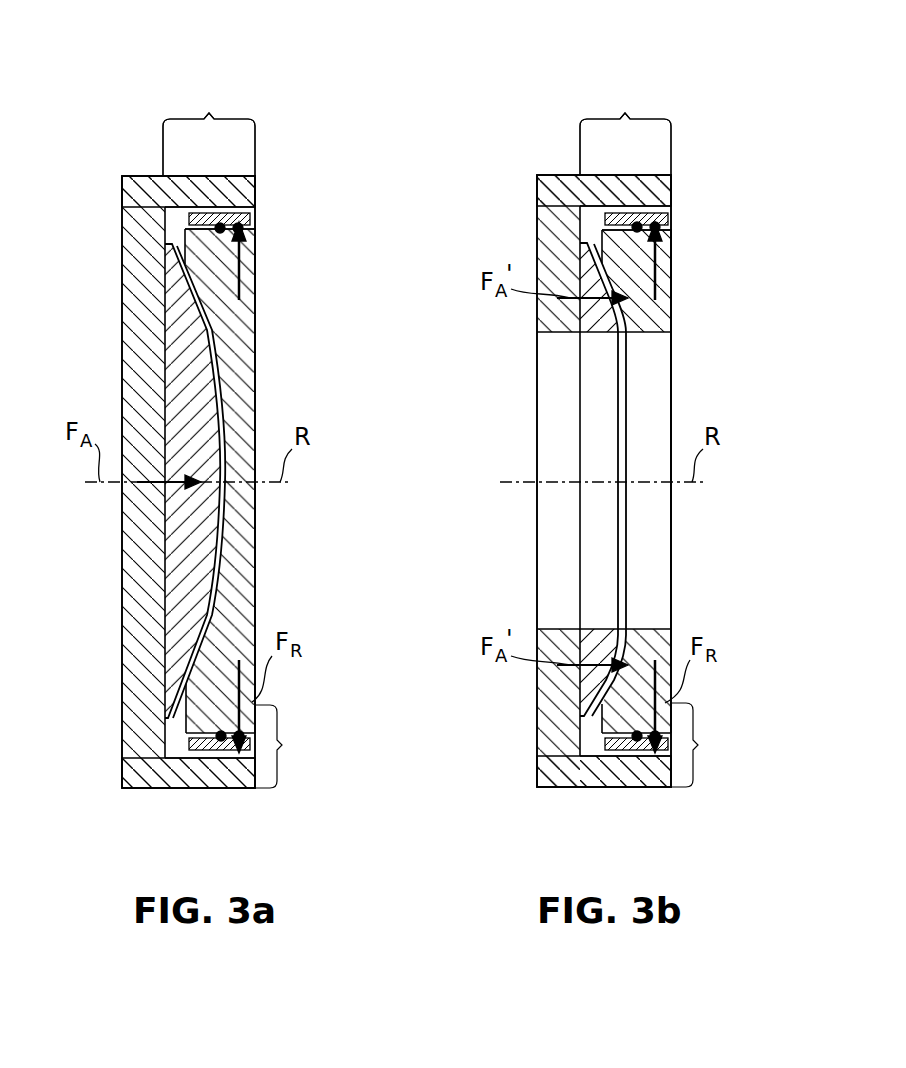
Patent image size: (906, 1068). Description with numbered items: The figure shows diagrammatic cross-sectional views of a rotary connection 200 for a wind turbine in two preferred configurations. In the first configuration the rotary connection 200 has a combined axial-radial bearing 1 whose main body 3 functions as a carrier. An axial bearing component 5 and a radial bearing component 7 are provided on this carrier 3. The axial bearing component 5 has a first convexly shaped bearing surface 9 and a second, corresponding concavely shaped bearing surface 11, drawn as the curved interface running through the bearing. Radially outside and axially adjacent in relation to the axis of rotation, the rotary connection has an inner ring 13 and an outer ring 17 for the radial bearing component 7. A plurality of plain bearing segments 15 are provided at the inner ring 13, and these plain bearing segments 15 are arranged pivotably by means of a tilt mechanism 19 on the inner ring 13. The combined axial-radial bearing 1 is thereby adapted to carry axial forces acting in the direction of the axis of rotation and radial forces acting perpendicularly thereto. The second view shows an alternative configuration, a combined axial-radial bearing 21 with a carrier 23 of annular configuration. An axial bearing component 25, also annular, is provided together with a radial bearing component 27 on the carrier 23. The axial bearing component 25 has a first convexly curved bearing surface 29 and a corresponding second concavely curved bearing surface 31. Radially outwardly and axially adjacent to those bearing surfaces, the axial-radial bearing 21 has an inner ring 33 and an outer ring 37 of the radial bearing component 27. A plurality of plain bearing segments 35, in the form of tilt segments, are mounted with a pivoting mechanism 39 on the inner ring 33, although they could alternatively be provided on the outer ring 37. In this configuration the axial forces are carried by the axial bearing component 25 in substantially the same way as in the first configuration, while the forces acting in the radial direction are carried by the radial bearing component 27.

In FIG. 3a, the combined axial-radial bearing 1 is at (110, 175).
In FIG. 3a, the main body 3 is at (142, 687).
In FIG. 3a, the axial bearing component 5 is at (209, 132).
In FIG. 3a, the radial bearing component 7 is at (277, 746).
In FIG. 3a, the first convexly shaped bearing surface 9 is at (180, 357).
In FIG. 3a, the second concavely shaped bearing surface 11 is at (232, 397).
In FIG. 3a, the inner ring 13 is at (247, 248).
In FIG. 3a, the plain bearing segments 15 is at (216, 213).
In FIG. 3a, the outer ring 17 is at (204, 186).
In FIG. 3a, the tilt mechanism 19 is at (203, 760).
In FIG. 3a, the rotary connection 200 is at (250, 111).
In FIG. 3b, the rotary connection 200 is at (666, 110).
In FIG. 3b, the combined axial-radial bearing 21 is at (524, 175).
In FIG. 3b, the carrier 23 is at (557, 685).
In FIG. 3b, the axial bearing component 25 is at (625, 131).
In FIG. 3b, the radial bearing component 27 is at (701, 745).
In FIG. 3b, the first convexly curved bearing surface 29 is at (601, 318).
In FIG. 3b, the second concavely curved bearing surface 31 is at (648, 318).
In FIG. 3b, the inner ring 33 is at (660, 246).
In FIG. 3b, the plain bearing segments 35 is at (634, 213).
In FIG. 3b, the outer ring 37 is at (624, 186).
In FIG. 3b, the pivoting mechanism 39 is at (619, 760).